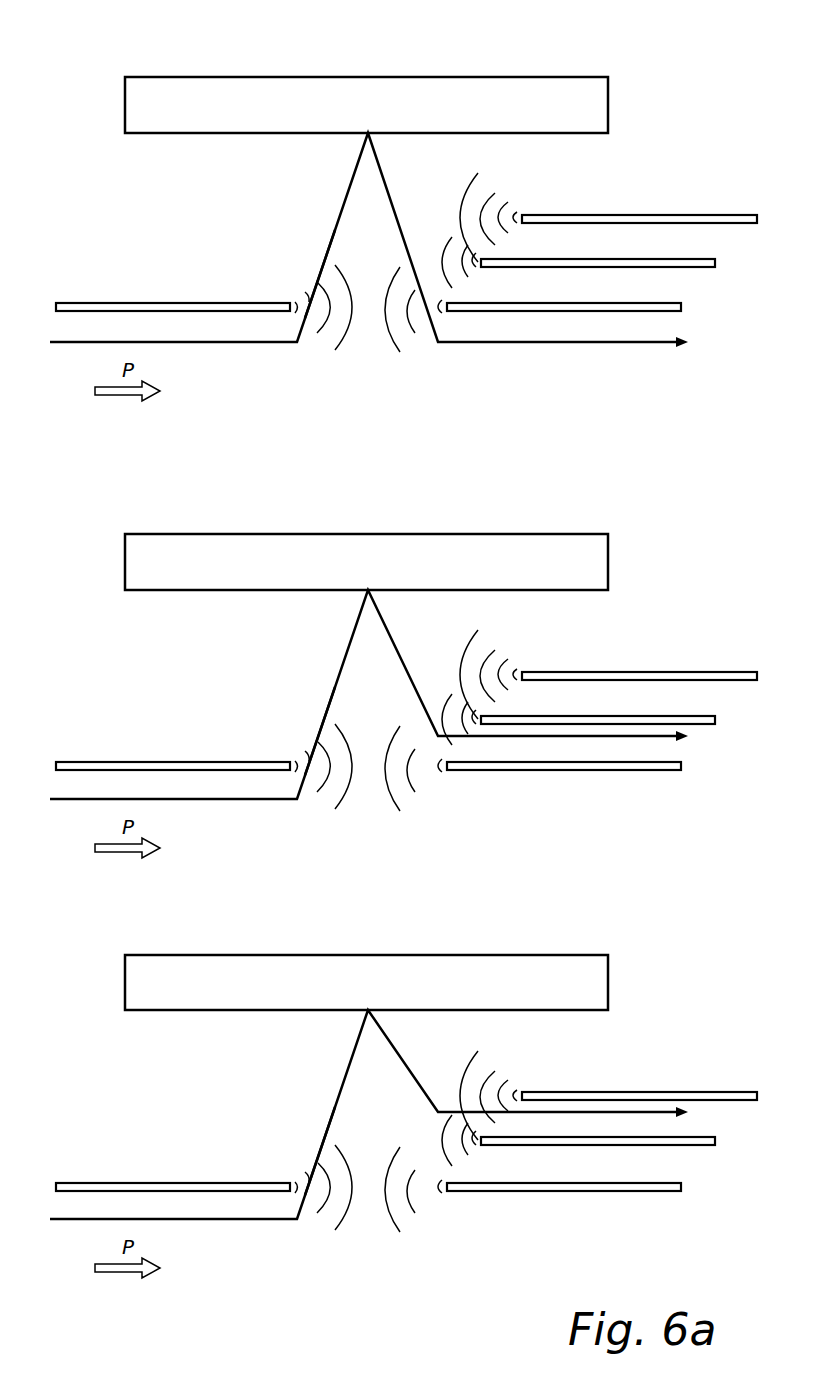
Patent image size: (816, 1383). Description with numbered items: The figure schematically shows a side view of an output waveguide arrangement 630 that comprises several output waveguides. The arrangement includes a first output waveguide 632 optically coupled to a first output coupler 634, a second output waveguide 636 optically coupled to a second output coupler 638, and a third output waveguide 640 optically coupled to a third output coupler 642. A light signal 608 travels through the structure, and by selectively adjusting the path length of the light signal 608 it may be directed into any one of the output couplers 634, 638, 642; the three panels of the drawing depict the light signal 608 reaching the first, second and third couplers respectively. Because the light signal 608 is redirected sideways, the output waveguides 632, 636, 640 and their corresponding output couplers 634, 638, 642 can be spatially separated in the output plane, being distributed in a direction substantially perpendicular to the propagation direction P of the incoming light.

The light signal 608 is at (333, 233).
The output waveguide arrangement 630 is at (458, 378).
The first output waveguide 632 is at (537, 313).
The first output coupler 634 is at (416, 318).
The second output waveguide 636 is at (613, 268).
The second output coupler 638 is at (437, 217).
The third output waveguide 640 is at (660, 215).
The third output coupler 642 is at (498, 205).